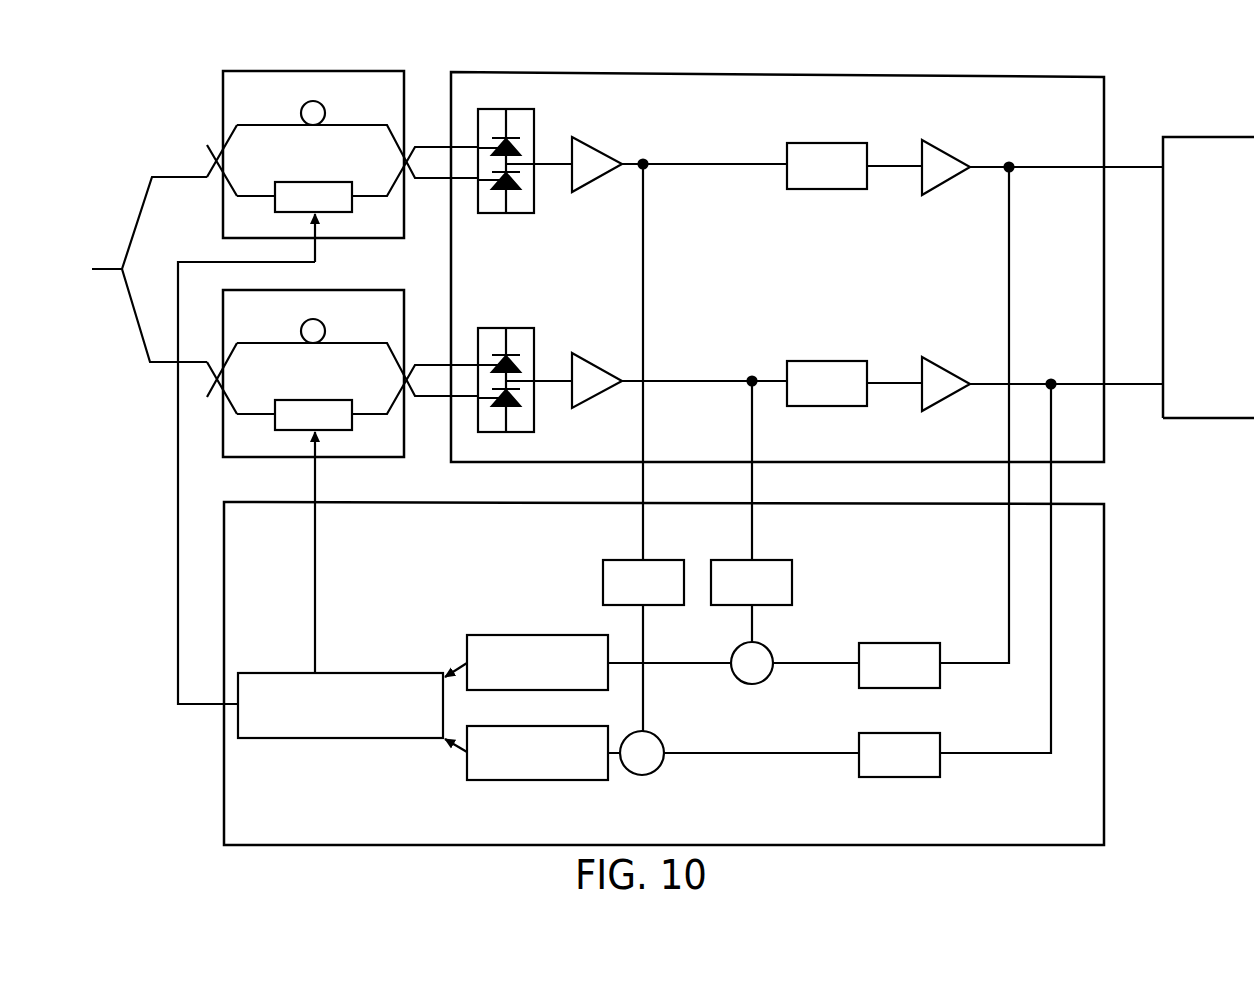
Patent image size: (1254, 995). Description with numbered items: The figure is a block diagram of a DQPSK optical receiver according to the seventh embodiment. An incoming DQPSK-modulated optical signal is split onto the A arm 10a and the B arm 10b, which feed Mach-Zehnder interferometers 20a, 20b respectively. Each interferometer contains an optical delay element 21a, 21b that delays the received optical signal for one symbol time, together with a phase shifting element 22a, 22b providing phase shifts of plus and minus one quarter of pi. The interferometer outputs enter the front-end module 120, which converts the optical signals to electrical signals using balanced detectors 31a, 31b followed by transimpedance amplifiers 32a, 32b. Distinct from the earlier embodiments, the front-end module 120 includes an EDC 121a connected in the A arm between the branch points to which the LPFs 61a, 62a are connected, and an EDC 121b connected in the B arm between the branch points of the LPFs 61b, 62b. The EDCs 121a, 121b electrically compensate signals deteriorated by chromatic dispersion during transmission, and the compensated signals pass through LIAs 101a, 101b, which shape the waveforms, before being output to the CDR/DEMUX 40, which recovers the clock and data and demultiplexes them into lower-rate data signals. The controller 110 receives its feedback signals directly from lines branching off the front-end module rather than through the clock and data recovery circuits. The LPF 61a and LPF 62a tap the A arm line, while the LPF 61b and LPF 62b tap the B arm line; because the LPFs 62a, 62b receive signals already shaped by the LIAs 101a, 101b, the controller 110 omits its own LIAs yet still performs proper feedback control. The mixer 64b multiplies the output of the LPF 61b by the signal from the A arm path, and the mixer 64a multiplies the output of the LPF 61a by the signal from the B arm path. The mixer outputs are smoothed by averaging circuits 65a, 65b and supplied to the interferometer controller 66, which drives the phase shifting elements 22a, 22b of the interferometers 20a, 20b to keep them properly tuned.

The A arm 10a is at (157, 152).
The B arm 10b is at (158, 384).
The Mach-Zehnder interferometer 20a is at (236, 72).
The Mach-Zehnder interferometer 20b is at (236, 457).
The optical delay element 21a is at (318, 103).
The optical delay element 21b is at (318, 321).
The phase shifting element 22a is at (290, 182).
The phase shifting element 22b is at (290, 400).
The front-end module 120 is at (472, 72).
The balanced detector 31a is at (493, 109).
The balanced detector 31b is at (493, 328).
The transimpedance amplifier 32a is at (595, 142).
The transimpedance amplifier 32b is at (595, 360).
The EDC 121a is at (805, 143).
The EDC 121b is at (805, 361).
The LIA 101a is at (946, 142).
The LIA 101b is at (946, 359).
The CDR/DEMUX 40 is at (1183, 137).
The controller 110 is at (404, 502).
The LPF 61a is at (660, 560).
The LPF 61b is at (768, 560).
The mixer 64a is at (660, 738).
The mixer 64b is at (770, 648).
The LPF 62a is at (869, 643).
The LPF 62b is at (869, 733).
The averaging circuit 65a is at (499, 635).
The averaging circuit 65b is at (499, 726).
The interferometer controller 66 is at (335, 673).